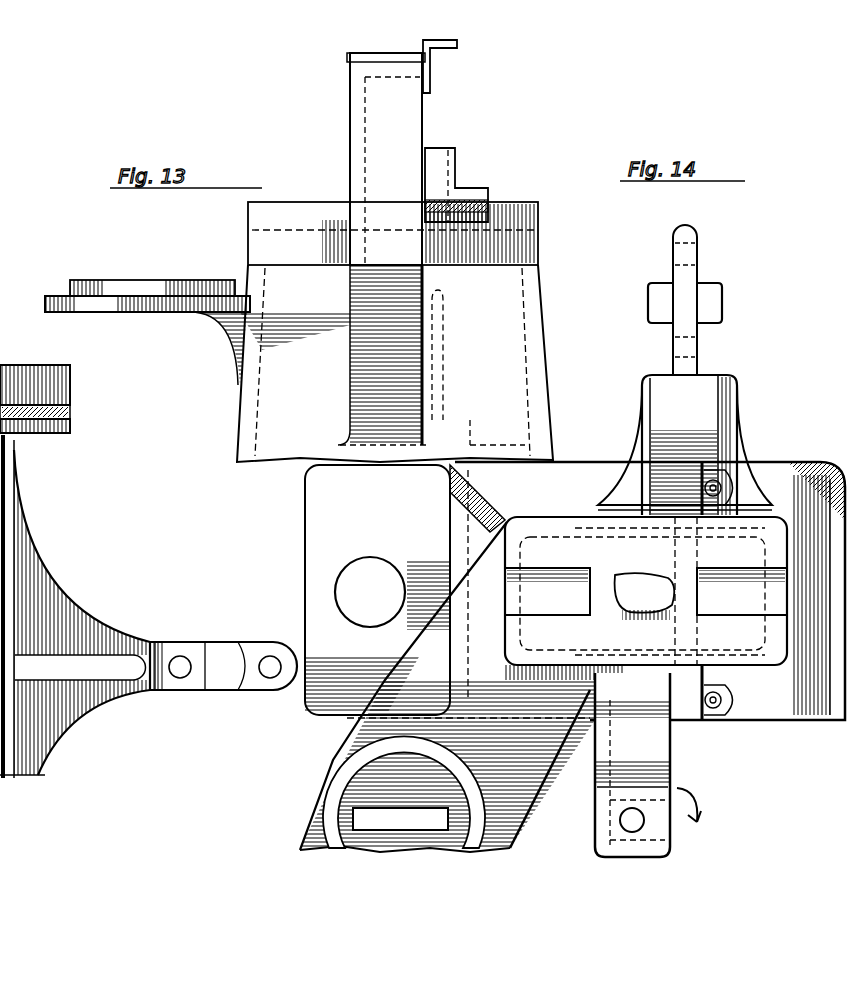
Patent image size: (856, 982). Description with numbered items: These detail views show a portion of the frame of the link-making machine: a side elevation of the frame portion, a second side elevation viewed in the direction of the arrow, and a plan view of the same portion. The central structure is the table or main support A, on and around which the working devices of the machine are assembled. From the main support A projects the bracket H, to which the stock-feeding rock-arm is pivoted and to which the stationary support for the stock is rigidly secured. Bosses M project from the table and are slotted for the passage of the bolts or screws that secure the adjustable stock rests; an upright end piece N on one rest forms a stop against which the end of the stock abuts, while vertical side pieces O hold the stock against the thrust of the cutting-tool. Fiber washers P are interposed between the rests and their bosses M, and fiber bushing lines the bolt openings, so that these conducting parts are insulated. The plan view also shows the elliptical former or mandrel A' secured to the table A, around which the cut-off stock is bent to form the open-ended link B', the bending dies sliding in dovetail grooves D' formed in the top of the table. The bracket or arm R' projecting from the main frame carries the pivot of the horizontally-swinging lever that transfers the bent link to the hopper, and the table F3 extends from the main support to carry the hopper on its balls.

In FIG. 12, the table or main support A is at (75, 606).
In FIG. 13, the table or main support A is at (371, 363).
In FIG. 14, the table or main support A is at (572, 657).
In FIG. 14, the elliptical former or mandrel A' is at (646, 598).
In FIG. 14, the open-ended link B' is at (742, 591).
In FIG. 14, the dovetail grooves D' is at (547, 591).
In FIG. 13, the table F3 is at (145, 312).
In FIG. 14, the table F3 is at (322, 820).
In FIG. 12, the bracket H is at (116, 638).
In FIG. 14, the bracket H is at (737, 390).
In FIG. 12, the bosses M is at (60, 436).
In FIG. 13, the bosses M is at (538, 212).
In FIG. 13, the upright end piece N is at (455, 168).
In FIG. 14, the upright end piece N is at (690, 722).
In FIG. 12, the vertical side pieces O is at (45, 366).
In FIG. 14, the vertical side pieces O is at (730, 470).
In FIG. 12, the fiber washers P is at (70, 418).
In FIG. 13, the fiber washers P is at (488, 204).
In FIG. 13, the bracket or arm R' is at (410, 242).
In FIG. 14, the bracket or arm R' is at (659, 765).